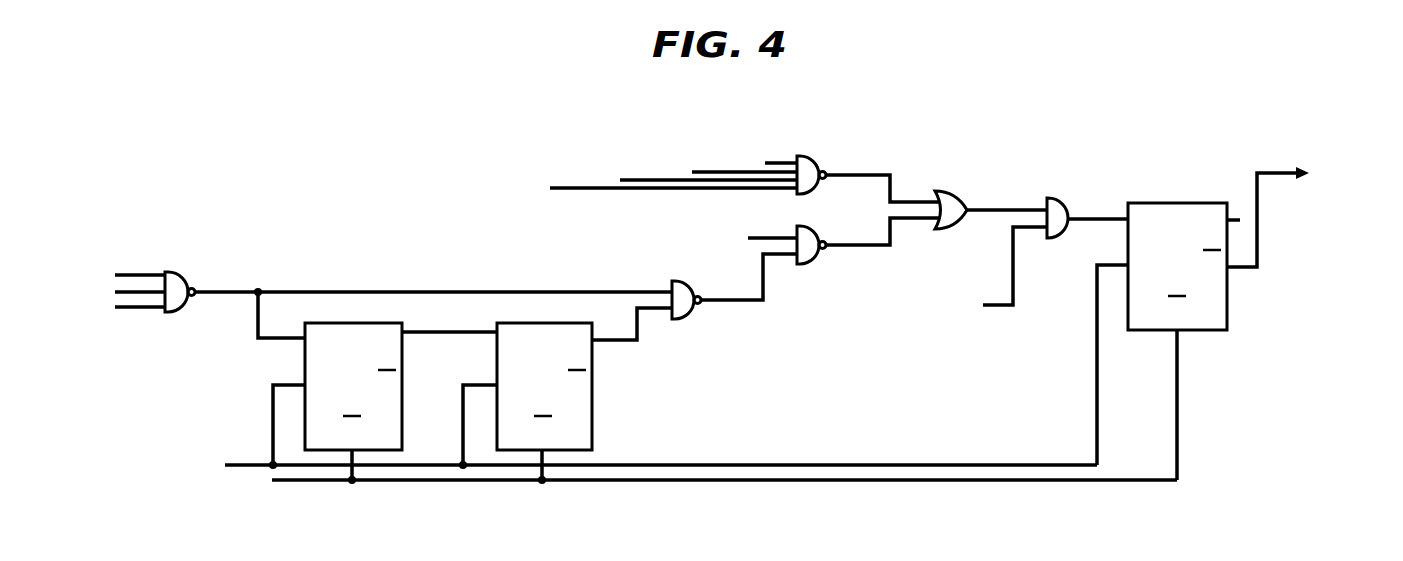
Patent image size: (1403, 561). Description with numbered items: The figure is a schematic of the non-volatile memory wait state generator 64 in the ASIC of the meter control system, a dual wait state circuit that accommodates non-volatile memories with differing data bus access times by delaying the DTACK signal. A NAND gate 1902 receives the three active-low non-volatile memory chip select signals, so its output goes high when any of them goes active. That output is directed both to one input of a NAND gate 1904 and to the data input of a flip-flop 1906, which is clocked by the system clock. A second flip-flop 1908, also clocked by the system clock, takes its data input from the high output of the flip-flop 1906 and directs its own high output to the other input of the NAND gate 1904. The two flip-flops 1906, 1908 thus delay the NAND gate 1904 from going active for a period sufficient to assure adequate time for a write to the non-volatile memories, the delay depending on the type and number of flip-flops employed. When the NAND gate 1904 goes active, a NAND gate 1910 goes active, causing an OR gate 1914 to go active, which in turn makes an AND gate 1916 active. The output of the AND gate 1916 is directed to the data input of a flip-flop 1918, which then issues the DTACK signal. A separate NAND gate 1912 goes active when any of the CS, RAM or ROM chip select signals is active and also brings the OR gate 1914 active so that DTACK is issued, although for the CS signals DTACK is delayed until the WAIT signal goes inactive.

The bus arbitration / DTACK generation logic circuit 64 is at (415, 172).
The NAND gate 1902 is at (182, 272).
The NAND gate 1904 is at (685, 319).
The flip-flop 1906 is at (404, 403).
The flip-flop 1908 is at (594, 403).
The NAND gate 1910 is at (808, 264).
The NAND gate 1912 is at (815, 156).
The OR gate 1914 is at (955, 192).
The AND gate 1916 is at (1060, 198).
The flip-flop 1918 is at (1227, 303).